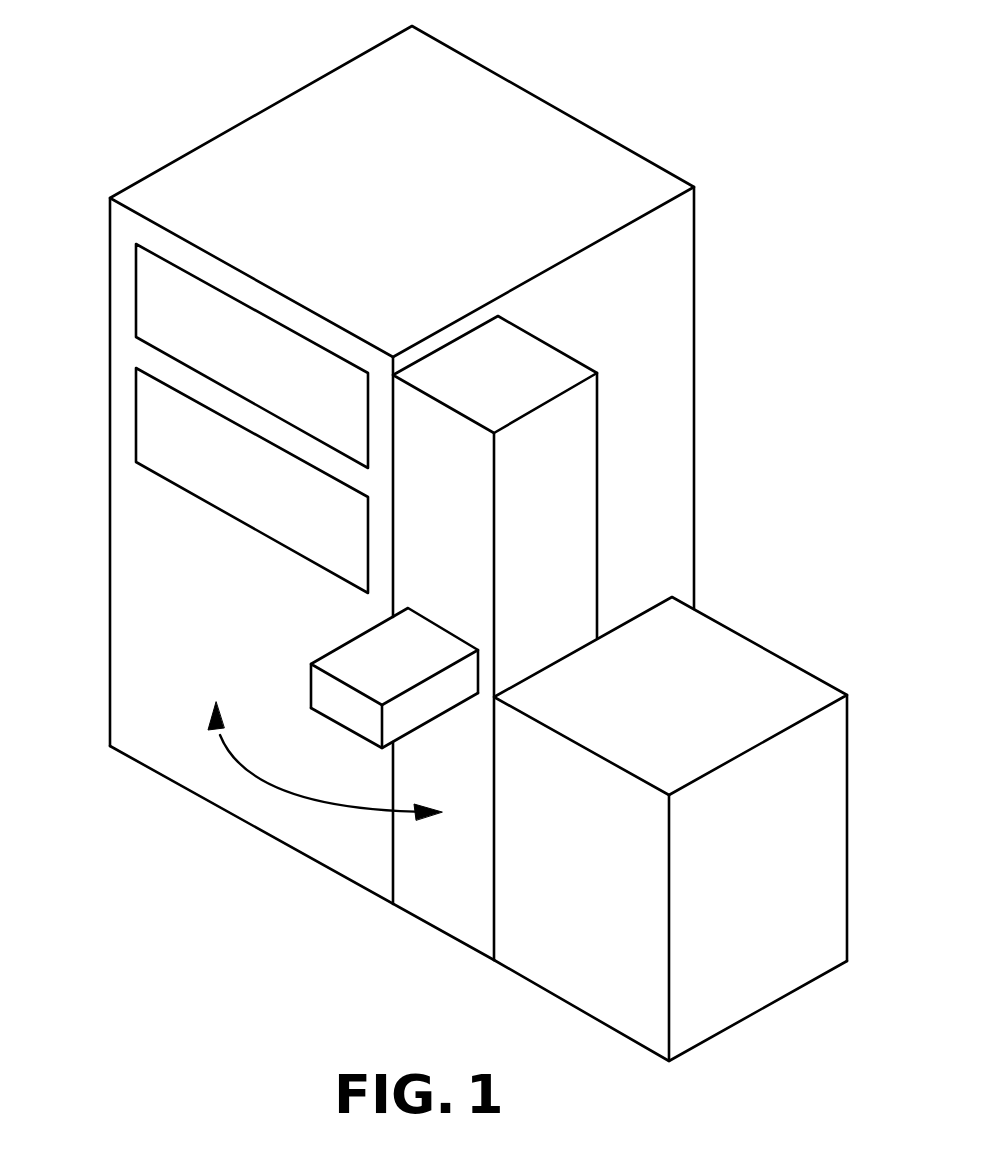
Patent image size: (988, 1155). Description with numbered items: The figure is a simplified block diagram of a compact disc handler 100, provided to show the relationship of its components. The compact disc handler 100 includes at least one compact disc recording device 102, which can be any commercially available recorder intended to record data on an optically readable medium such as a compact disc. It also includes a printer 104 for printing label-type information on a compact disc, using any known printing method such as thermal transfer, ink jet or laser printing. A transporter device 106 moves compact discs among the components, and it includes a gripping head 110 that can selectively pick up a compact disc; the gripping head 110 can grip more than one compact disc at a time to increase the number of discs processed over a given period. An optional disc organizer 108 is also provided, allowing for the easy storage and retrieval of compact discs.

The compact disc handler 100 is at (737, 90).
The compact disc recording device 102 is at (148, 307).
The printer 104 is at (148, 433).
The transporter device 106 is at (578, 432).
The disc organizer 108 is at (794, 689).
The gripping head 110 is at (343, 730).